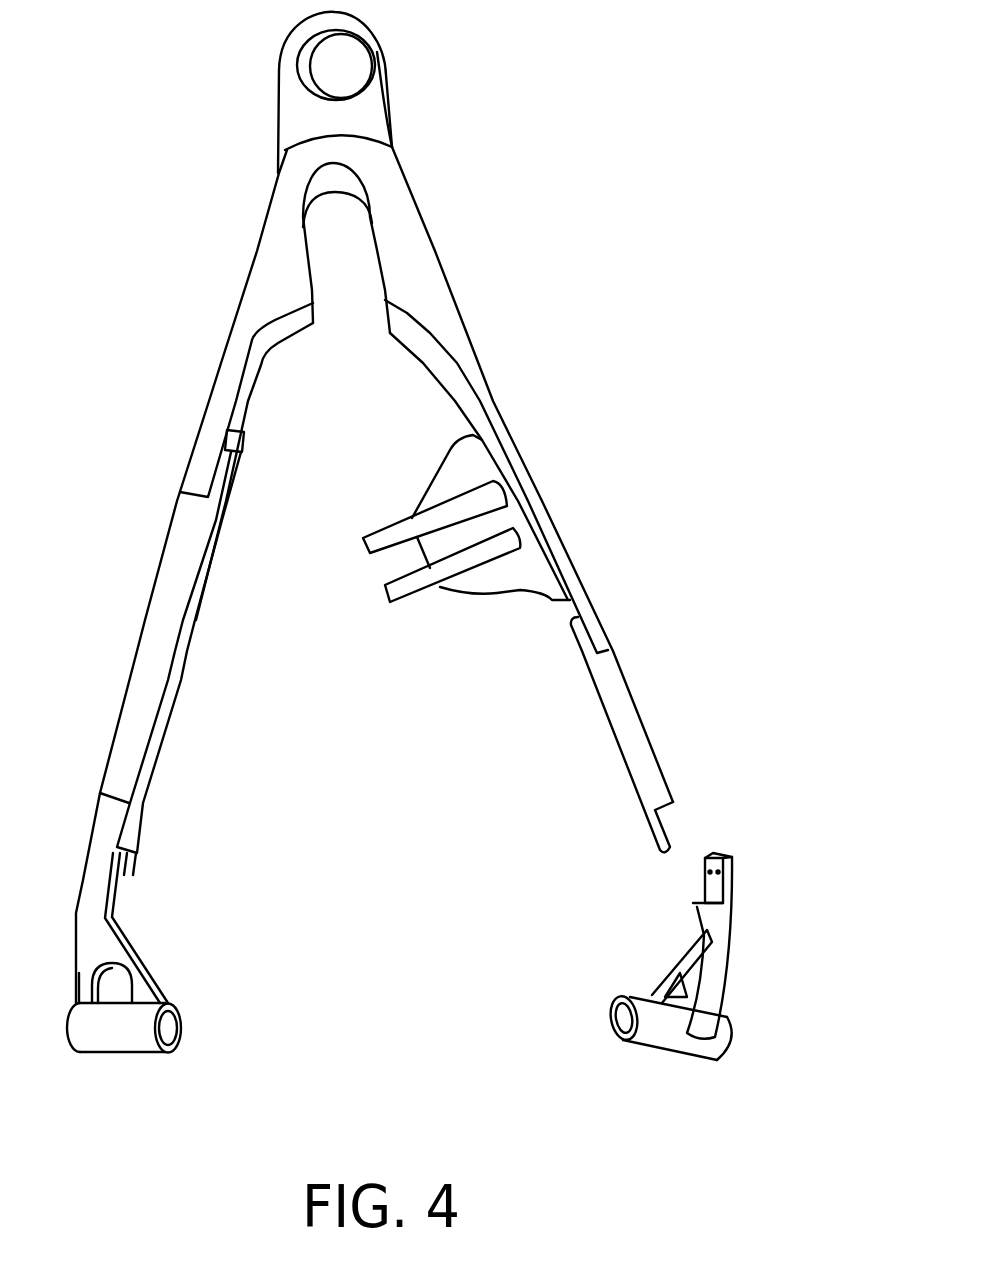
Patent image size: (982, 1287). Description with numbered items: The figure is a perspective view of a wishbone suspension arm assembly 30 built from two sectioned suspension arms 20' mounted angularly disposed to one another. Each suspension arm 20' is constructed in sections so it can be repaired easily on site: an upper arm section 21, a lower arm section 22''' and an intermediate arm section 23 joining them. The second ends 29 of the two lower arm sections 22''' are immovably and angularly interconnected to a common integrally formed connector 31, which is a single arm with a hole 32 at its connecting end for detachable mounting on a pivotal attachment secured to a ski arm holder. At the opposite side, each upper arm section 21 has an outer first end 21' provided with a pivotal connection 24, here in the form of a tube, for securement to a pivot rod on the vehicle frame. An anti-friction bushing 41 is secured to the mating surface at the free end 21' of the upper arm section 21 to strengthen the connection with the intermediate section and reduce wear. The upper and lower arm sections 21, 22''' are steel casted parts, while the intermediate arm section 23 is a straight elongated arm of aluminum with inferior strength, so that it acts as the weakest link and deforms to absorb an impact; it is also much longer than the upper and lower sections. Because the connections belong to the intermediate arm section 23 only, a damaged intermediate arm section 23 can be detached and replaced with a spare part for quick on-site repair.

The suspension arm 20' is at (371, 652).
The upper arm section 21 is at (437, 938).
The first end of upper arm section 21' is at (729, 946).
The lower arm section 22''' is at (372, 476).
The intermediate arm section 23 is at (179, 683).
The pivotal connection 24 is at (138, 1012).
The second ends of lower arm sections 29 is at (280, 245).
The wishbone suspension arm assembly 30 is at (642, 300).
The common integrally formed connector 31 is at (388, 67).
The hole 32 is at (350, 42).
The anti-friction bushing 41 is at (707, 882).